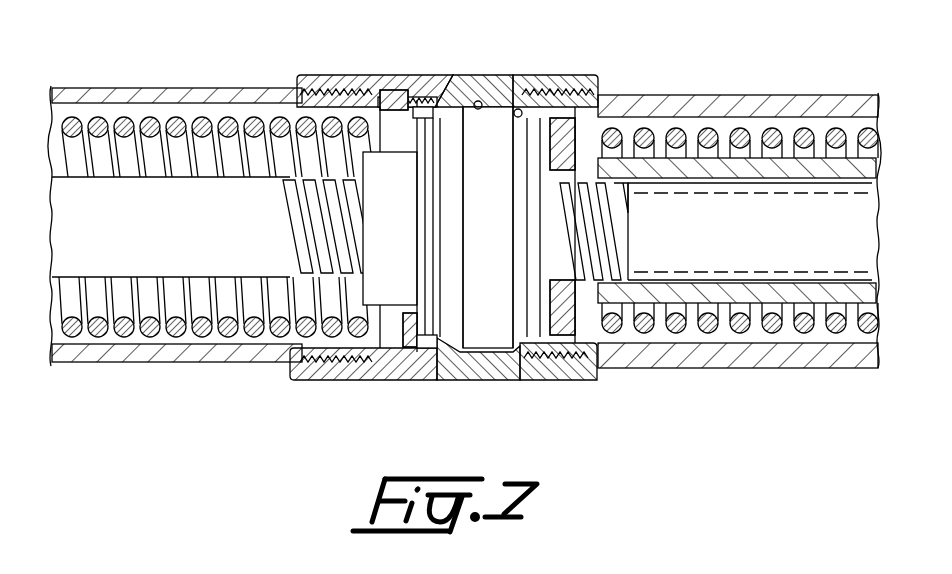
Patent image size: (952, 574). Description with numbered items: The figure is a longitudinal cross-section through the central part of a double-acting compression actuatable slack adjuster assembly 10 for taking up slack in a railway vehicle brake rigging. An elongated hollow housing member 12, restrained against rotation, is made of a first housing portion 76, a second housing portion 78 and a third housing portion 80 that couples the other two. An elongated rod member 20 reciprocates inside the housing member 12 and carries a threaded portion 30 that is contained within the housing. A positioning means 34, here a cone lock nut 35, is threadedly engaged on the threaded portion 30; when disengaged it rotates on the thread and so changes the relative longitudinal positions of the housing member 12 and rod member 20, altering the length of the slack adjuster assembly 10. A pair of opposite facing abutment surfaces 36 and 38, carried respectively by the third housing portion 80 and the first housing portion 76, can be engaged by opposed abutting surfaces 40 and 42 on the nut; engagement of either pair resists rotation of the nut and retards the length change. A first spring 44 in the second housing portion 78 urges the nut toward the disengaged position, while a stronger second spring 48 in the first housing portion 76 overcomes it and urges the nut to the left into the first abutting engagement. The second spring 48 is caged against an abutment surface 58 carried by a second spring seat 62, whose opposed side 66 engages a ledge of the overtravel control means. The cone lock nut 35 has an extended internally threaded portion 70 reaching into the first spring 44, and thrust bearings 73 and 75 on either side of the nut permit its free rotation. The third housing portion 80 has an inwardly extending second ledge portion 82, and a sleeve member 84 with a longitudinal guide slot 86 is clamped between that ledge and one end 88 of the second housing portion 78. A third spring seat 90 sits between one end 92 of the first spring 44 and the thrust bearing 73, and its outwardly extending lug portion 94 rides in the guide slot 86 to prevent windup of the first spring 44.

The slack adjuster assembly 10 is at (444, 227).
The housing member 12 is at (771, 211).
The rod member 20 is at (884, 215).
The threaded portion 30 is at (616, 210).
The positioning means 34 is at (492, 335).
The cone lock nut 35 is at (492, 352).
The abutment surface 36 is at (483, 90).
The abutment surface 38 is at (520, 98).
The abutting surface 40 is at (447, 345).
The abutting surface 42 is at (522, 343).
The first spring 44 is at (203, 126).
The second spring 48 is at (771, 136).
The abutment surface 58 is at (553, 163).
The second spring seat 62 is at (562, 344).
The opposed side 66 is at (547, 313).
The extended internally threaded portion 70 is at (400, 252).
The thrust bearing 73 is at (426, 135).
The thrust bearing 75 is at (548, 100).
The first housing portion 76 is at (835, 106).
The second housing portion 78 is at (128, 97).
The third housing portion 80 is at (324, 85).
The second ledge portion 82 is at (432, 349).
The sleeve member 84 is at (384, 92).
The longitudinal guide slot 86 is at (440, 100).
The end of second housing portion 88 is at (370, 352).
The third spring seat 90 is at (413, 97).
The end of first spring 92 is at (402, 117).
The lug portion 94 is at (407, 348).